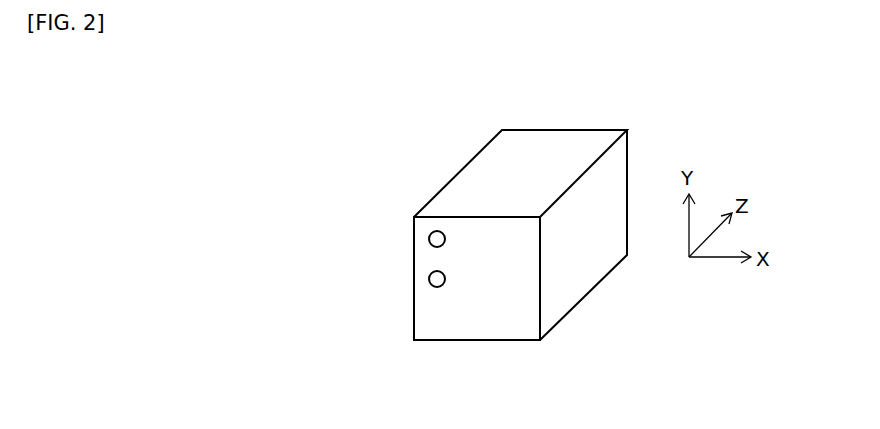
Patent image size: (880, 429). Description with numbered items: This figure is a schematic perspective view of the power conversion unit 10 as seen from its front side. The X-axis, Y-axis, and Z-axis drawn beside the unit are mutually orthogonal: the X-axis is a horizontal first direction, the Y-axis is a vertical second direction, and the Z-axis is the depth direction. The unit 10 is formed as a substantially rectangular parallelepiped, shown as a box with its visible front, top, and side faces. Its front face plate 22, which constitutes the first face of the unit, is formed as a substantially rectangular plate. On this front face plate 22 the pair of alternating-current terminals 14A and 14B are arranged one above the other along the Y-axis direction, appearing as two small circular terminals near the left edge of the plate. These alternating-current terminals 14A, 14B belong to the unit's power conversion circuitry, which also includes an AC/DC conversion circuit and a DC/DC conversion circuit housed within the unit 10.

The power conversion unit 10 is at (485, 177).
The front face plate 22 is at (483, 300).
The alternating-current terminal 14A is at (429, 239).
The alternating-current terminal 14B is at (429, 279).